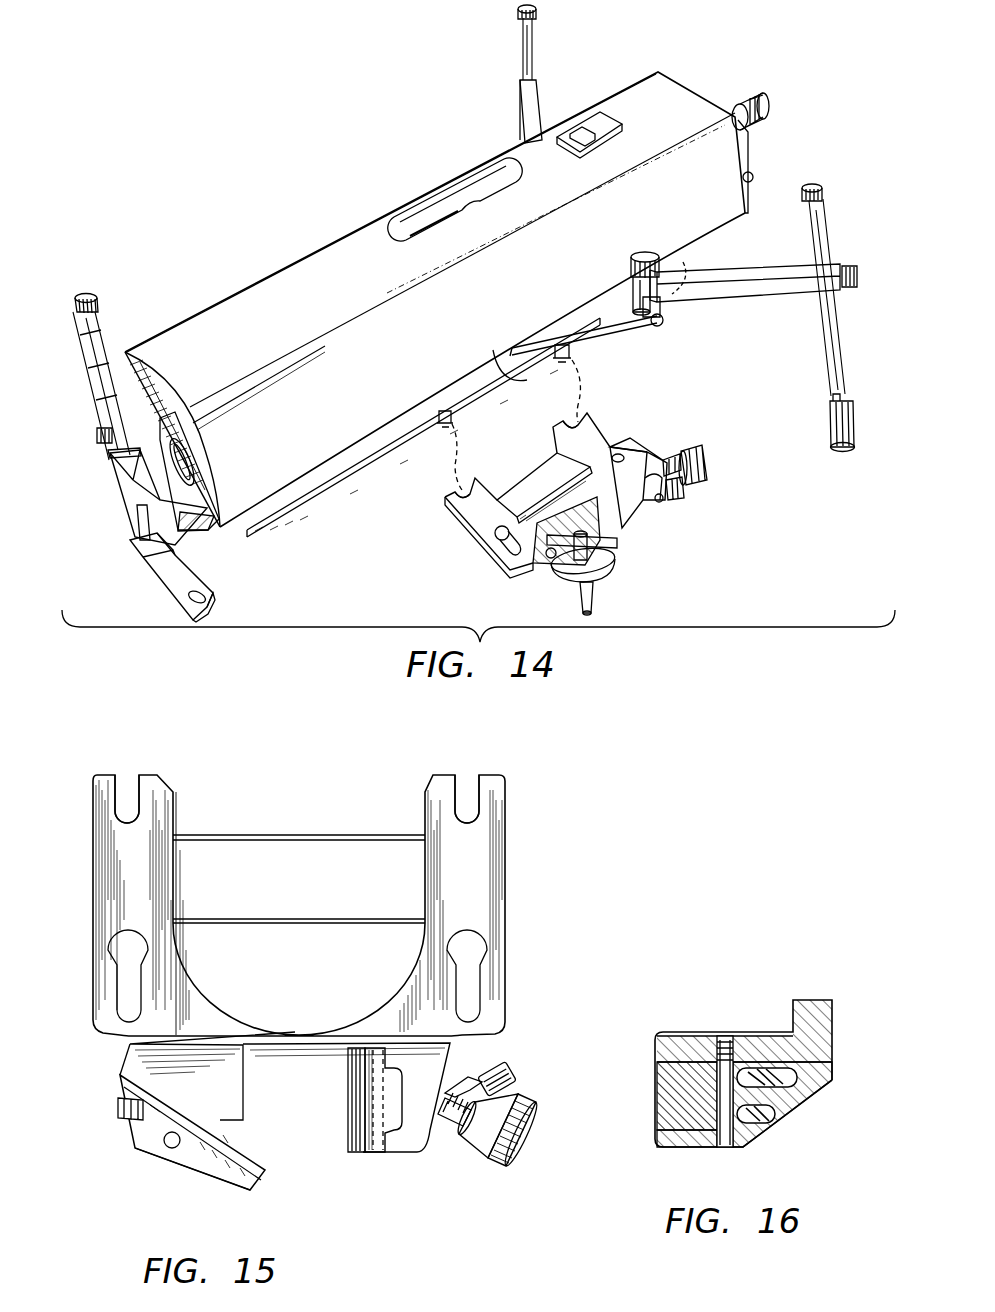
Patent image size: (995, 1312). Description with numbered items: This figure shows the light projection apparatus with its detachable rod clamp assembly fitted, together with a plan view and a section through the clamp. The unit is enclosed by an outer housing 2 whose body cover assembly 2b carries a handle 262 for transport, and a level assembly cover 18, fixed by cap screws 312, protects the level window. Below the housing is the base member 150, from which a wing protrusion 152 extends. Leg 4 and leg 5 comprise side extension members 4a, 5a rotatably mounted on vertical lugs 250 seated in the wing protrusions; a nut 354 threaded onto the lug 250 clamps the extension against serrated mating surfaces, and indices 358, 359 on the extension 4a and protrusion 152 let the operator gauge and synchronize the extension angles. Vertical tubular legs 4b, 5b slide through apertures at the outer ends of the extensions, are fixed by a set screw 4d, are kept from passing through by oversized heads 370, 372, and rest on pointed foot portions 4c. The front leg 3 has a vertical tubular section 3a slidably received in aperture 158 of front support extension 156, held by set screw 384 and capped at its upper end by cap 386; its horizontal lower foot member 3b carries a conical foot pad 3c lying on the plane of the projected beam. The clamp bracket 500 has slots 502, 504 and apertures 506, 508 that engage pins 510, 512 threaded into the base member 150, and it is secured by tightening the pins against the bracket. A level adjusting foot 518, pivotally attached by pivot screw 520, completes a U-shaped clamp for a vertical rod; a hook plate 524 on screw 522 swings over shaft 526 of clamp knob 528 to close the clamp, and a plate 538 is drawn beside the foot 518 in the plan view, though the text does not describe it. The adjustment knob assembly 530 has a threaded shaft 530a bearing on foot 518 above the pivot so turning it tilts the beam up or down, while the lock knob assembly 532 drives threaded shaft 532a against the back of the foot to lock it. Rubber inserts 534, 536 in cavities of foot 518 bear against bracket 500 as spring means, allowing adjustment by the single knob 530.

In FIG. 14, the outer housing 2 is at (414, 349).
In FIG. 14, the body cover assembly 2b is at (247, 292).
In FIG. 14, the front leg 3 is at (217, 572).
In FIG. 14, the vertical tubular section 3a is at (112, 348).
In FIG. 14, the horizontal lower foot member 3b is at (178, 590).
In FIG. 14, the foot pad 3c is at (210, 608).
In FIG. 14, the leg 4 is at (800, 393).
In FIG. 14, the side extension member 4a is at (766, 275).
In FIG. 14, the vertical tubular leg 4b is at (826, 232).
In FIG. 14, the foot portion 4c is at (852, 418).
In FIG. 14, the set screw 4d is at (858, 276).
In FIG. 14, the leg 5 is at (500, 52).
In FIG. 14, the side extension member 5a is at (524, 108).
In FIG. 14, the vertical tubular leg 5b is at (537, 30).
In FIG. 14, the level assembly cover 18 is at (598, 128).
In FIG. 14, the base member 150 is at (357, 452).
In FIG. 14, the wing protrusion 152 is at (615, 314).
In FIG. 14, the front support extension 156 is at (160, 513).
In FIG. 14, the aperture 158 is at (109, 444).
In FIG. 14, the vertical lug 250 is at (680, 264).
In FIG. 14, the handle 262 is at (432, 200).
In FIG. 14, the cap screws 312 is at (573, 150).
In FIG. 14, the nut 354 is at (648, 255).
In FIG. 14, the index 358 is at (660, 305).
In FIG. 14, the index 359 is at (663, 324).
In FIG. 14, the oversized head 370 is at (822, 182).
In FIG. 14, the oversized head 372 is at (518, 10).
In FIG. 14, the set screw 384 is at (97, 432).
In FIG. 14, the cap 386 is at (90, 292).
In FIG. 14, the bracket 500 is at (480, 520).
In FIG. 15, the bracket 500 is at (492, 877).
In FIG. 16, the bracket 500 is at (700, 1030).
In FIG. 14, the slot 502 is at (458, 492).
In FIG. 15, the slot 502 is at (133, 780).
In FIG. 14, the slot 504 is at (570, 420).
In FIG. 15, the slot 504 is at (470, 778).
In FIG. 14, the aperture 506 is at (500, 542).
In FIG. 15, the aperture 506 is at (110, 956).
In FIG. 14, the aperture 508 is at (620, 454).
In FIG. 15, the aperture 508 is at (486, 955).
In FIG. 14, the pin 510 is at (443, 428).
In FIG. 14, the pin 512 is at (573, 360).
In FIG. 14, the level adjusting foot 518 is at (638, 516).
In FIG. 15, the level adjusting foot 518 is at (362, 1117).
In FIG. 16, the level adjusting foot 518 is at (660, 1090).
In FIG. 14, the pivot screw 520 is at (662, 504).
In FIG. 15, the pivot screw 520 is at (373, 1088).
In FIG. 16, the pivot screw 520 is at (740, 1150).
In FIG. 14, the screw 522 is at (551, 560).
In FIG. 15, the screw 522 is at (118, 1111).
In FIG. 14, the hook plate 524 is at (612, 552).
In FIG. 15, the hook plate 524 is at (254, 1170).
In FIG. 15, the shaft 526 is at (195, 1108).
In FIG. 14, the clamp knob 528 is at (596, 588).
In FIG. 15, the clamp knob 528 is at (195, 1183).
In FIG. 14, the adjustment knob assembly 530 is at (704, 450).
In FIG. 15, the adjustment knob assembly 530 is at (522, 1152).
In FIG. 14, the threaded shaft 530a is at (677, 455).
In FIG. 15, the threaded shaft 530a is at (462, 1125).
In FIG. 14, the lock knob assembly 532 is at (685, 490).
In FIG. 15, the lock knob assembly 532 is at (512, 1066).
In FIG. 15, the threaded shaft 532a is at (460, 1085).
In FIG. 16, the rubber insert 534 is at (762, 1066).
In FIG. 16, the rubber insert 536 is at (770, 1122).
In FIG. 15, the plate 538 is at (348, 1070).